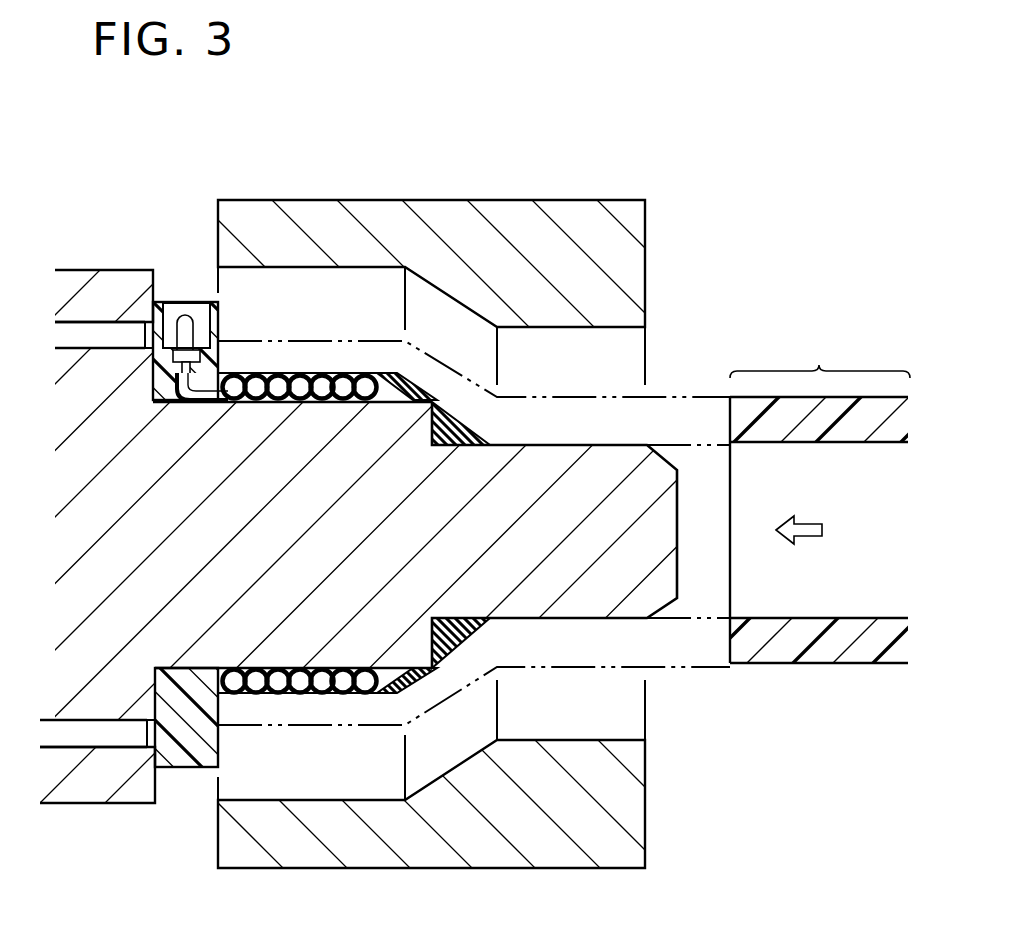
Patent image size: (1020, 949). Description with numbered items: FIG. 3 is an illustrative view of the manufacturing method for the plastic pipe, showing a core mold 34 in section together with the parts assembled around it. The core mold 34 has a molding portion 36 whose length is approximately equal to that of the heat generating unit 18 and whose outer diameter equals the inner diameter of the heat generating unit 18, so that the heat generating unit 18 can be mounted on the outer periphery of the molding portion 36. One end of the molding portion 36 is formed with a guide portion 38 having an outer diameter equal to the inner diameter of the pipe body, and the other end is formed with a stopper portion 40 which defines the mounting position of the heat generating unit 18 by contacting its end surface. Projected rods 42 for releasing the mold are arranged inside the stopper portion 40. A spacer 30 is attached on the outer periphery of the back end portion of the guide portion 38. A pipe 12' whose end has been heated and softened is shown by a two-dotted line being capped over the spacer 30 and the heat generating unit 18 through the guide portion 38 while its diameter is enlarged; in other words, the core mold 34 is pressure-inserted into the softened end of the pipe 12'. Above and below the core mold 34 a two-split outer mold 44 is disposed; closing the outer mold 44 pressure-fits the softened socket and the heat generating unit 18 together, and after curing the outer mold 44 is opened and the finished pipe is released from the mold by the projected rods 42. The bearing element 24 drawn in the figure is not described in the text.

The pipe 12' is at (591, 543).
The heat generating unit 18 is at (248, 360).
The bearing 24 is at (342, 383).
The spacer 30 is at (457, 427).
The core mold 34 is at (93, 223).
The molding portion 36 is at (280, 383).
The guide portion 38 is at (622, 502).
The stopper portion 40 is at (127, 282).
The projected rods 42 is at (87, 333).
The outer mold 44 is at (508, 228).